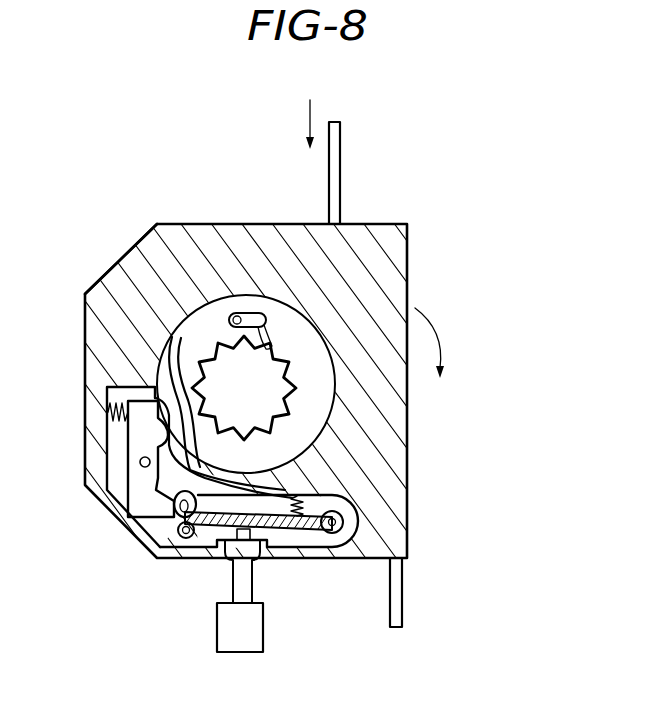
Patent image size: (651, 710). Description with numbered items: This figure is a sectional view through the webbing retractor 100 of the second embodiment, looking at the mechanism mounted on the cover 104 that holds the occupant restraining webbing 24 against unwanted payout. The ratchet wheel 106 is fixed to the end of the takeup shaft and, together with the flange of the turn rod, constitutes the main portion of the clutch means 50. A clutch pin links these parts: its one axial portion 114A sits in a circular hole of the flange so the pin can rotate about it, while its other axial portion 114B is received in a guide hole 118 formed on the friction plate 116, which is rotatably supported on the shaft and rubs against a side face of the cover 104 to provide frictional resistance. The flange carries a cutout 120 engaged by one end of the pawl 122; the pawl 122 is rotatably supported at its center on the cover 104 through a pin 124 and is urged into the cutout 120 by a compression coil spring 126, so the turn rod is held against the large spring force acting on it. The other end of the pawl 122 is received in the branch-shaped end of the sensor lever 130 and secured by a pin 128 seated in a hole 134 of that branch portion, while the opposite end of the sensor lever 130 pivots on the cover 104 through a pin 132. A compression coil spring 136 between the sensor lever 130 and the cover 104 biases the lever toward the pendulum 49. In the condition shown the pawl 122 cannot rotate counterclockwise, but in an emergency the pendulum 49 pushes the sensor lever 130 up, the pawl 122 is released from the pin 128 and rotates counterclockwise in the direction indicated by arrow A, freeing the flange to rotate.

The webbing retractor 100 is at (146, 194).
The cover 104 is at (388, 240).
The friction plate 116 is at (152, 250).
The occupant restraining webbing 24 is at (342, 150).
The clutch means 50 is at (310, 349).
The guide hole 118 is at (283, 302).
The one axial portion of clutch pin 114A is at (237, 315).
The other axial portion of clutch pin 114B is at (251, 315).
The ratchet wheel 106 is at (232, 342).
The cutout 120 is at (112, 372).
The compression coil spring 126 is at (104, 413).
The pawl 122 is at (134, 440).
The pin 124 is at (142, 466).
The hole 134 is at (176, 514).
The pin 128 is at (184, 539).
The sensor lever 130 is at (310, 530).
The pin 132 is at (344, 523).
The compression coil spring 136 is at (357, 497).
The pendulum 49 is at (265, 625).
The direction arrow A is at (440, 346).